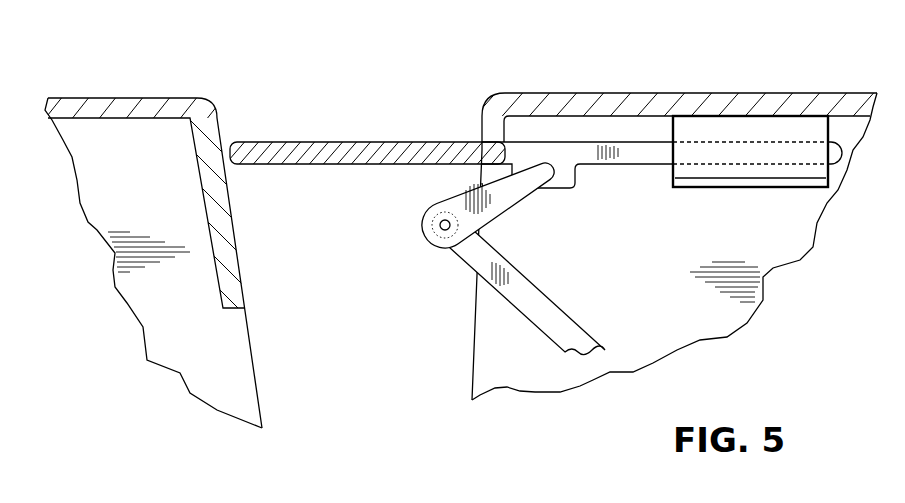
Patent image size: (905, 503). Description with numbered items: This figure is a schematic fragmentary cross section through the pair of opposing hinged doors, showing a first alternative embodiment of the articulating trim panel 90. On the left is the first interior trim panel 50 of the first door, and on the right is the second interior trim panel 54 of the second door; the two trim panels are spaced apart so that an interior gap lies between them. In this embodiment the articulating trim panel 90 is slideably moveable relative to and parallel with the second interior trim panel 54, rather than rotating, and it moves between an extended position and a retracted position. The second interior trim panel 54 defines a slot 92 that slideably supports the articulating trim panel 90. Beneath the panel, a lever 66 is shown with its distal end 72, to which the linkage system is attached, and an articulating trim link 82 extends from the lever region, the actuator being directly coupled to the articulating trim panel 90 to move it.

The first interior trim panel 50 is at (90, 98).
The second interior trim panel 54 is at (760, 93).
The lever 66 is at (458, 196).
The distal end 72 is at (424, 238).
The articulating trim link 82 is at (542, 302).
The articulating trim panel 90 is at (372, 141).
The slot 92 is at (733, 147).